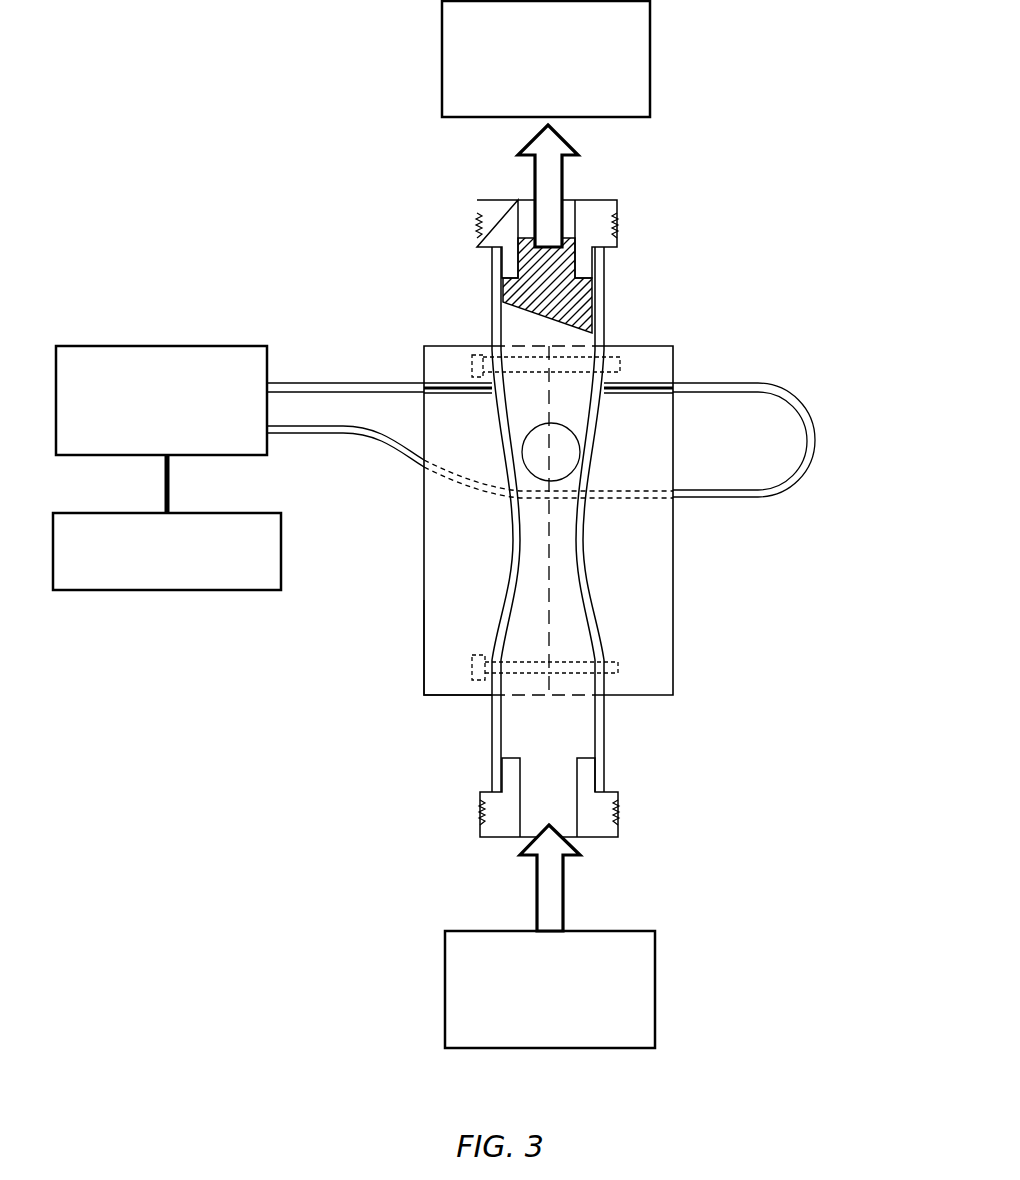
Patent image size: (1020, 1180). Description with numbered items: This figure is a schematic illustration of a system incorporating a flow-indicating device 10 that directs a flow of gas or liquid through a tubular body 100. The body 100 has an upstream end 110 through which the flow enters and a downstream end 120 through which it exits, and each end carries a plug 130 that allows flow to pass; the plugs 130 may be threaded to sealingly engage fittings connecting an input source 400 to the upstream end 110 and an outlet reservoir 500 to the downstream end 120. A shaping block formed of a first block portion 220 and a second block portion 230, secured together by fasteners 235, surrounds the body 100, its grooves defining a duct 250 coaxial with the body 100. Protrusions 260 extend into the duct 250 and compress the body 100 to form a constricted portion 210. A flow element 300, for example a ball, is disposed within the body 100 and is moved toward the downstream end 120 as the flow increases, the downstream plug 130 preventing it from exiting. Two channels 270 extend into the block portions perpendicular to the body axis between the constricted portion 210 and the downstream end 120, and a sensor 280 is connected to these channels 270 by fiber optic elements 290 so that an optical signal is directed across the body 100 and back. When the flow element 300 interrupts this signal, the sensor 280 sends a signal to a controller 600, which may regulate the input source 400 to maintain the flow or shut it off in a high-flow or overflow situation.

The flow-indicating device 10 is at (642, 313).
The tubular body 100 is at (492, 270).
The upstream end 110 is at (608, 789).
The downstream end 120 is at (606, 255).
The plug 130 is at (596, 210).
The constricted portion 210 is at (577, 546).
The first block portion 220 is at (448, 682).
The second block portion 230 is at (662, 686).
The fasteners 235 is at (620, 365).
The duct 250 is at (489, 700).
The protrusions 260 is at (513, 538).
The channels 270 is at (452, 385).
The sensor 280 is at (161, 400).
The fiber optic elements 290 is at (367, 383).
The flow element 300 is at (557, 457).
The input source 400 is at (550, 989).
The outlet reservoir 500 is at (546, 59).
The controller 600 is at (167, 522).